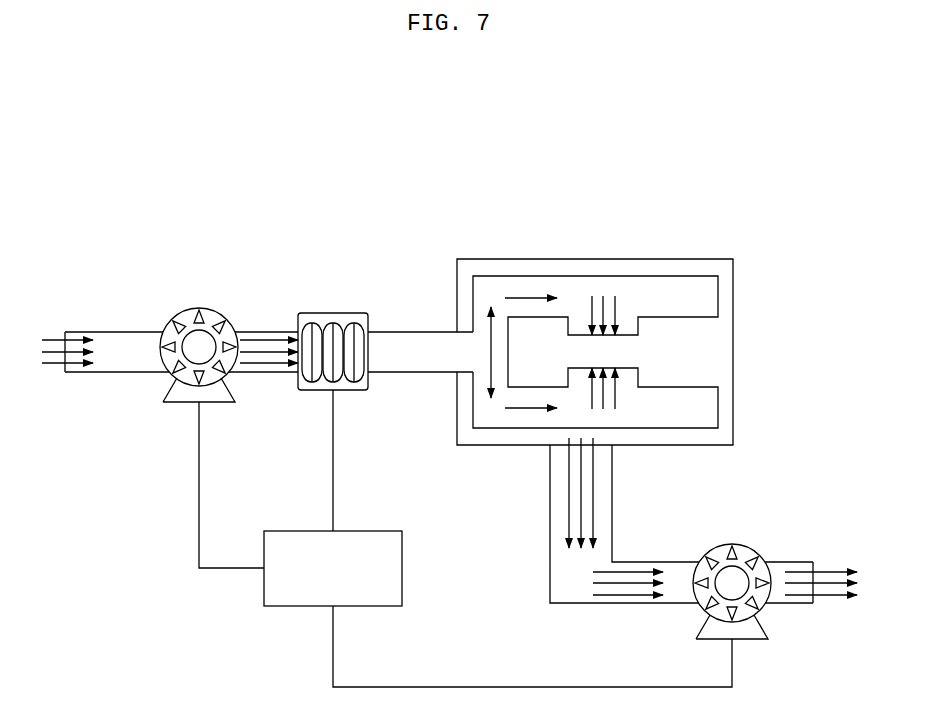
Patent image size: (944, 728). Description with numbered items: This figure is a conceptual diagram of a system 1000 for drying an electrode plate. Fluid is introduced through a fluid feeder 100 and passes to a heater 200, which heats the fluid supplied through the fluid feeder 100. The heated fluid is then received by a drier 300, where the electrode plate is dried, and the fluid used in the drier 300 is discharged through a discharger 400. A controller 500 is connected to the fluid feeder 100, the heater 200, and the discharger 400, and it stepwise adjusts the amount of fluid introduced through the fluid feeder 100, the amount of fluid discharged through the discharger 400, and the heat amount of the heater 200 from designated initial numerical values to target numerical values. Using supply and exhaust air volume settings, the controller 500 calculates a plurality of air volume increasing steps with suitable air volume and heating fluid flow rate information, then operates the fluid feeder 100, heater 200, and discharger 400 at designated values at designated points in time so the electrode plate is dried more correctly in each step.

The system for drying an electrode plate 1000 is at (806, 178).
The fluid feeder 100 is at (197, 305).
The heater 200 is at (333, 312).
The drier 300 is at (543, 258).
The discharger 400 is at (732, 543).
The controller 500 is at (291, 607).